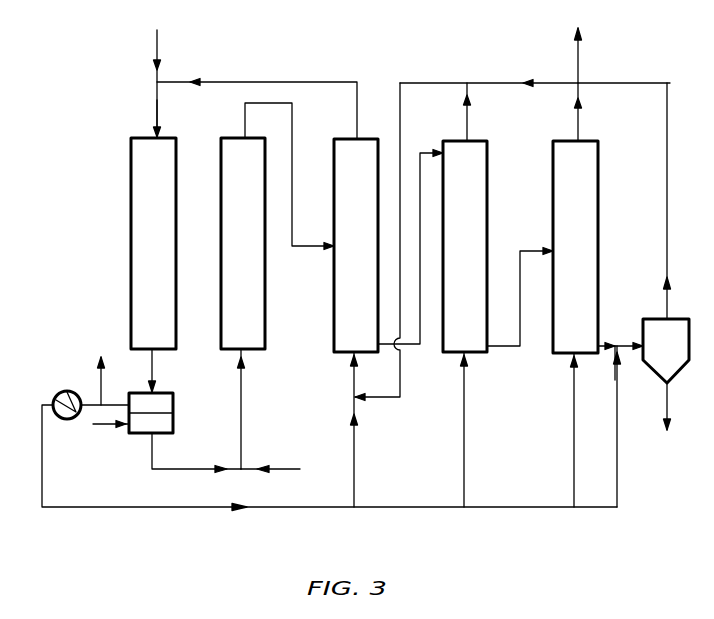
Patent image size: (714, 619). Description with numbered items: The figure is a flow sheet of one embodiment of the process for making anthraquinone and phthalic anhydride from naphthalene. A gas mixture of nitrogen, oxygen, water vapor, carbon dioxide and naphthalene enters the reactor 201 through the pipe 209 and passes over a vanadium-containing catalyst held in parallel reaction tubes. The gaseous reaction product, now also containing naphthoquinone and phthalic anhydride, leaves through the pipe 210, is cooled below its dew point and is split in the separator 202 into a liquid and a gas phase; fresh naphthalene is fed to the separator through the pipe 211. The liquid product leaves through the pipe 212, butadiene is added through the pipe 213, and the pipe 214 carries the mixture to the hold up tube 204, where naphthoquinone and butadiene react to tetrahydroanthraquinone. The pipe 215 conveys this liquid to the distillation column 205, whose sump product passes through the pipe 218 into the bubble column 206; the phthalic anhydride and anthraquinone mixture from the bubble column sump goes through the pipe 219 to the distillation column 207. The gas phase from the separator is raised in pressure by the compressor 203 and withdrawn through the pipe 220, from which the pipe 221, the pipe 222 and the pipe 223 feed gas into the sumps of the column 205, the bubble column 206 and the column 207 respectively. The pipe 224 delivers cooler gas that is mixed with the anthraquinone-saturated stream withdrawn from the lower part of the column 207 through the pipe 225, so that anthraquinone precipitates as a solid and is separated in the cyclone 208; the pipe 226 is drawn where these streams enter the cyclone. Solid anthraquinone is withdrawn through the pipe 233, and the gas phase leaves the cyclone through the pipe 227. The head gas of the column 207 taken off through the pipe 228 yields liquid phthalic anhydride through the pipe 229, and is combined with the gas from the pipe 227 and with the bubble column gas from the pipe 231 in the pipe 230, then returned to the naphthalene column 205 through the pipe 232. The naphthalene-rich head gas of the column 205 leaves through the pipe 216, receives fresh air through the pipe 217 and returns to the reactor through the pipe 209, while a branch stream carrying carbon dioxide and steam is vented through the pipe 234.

The reactor 201 is at (153, 243).
The separator 202 is at (173, 400).
The compressor 203 is at (68, 420).
The hold up tube 204 is at (243, 243).
The distillation column 205 is at (356, 245).
The bubble column 206 is at (465, 246).
The distillation column 207 is at (575, 247).
The cyclone 208 is at (666, 351).
The pipe 209 is at (157, 110).
The pipe 210 is at (152, 370).
The pipe 211 is at (105, 424).
The pipe 212 is at (200, 469).
The pipe 213 is at (271, 469).
The pipe 214 is at (241, 385).
The pipe 215 is at (292, 122).
The pipe 216 is at (244, 82).
The pipe 217 is at (158, 48).
The pipe 218 is at (420, 338).
The pipe 219 is at (520, 346).
The pipe 220 is at (204, 506).
The pipe 221 is at (353, 455).
The pipe 222 is at (463, 457).
The pipe 223 is at (573, 457).
The pipe 224 is at (617, 458).
The pipe 225 is at (607, 344).
The line 226 is at (627, 350).
The pipe 227 is at (666, 242).
The pipe 228 is at (578, 120).
The pipe 229 is at (578, 50).
The pipe 230 is at (485, 83).
The pipe 231 is at (467, 117).
The pipe 232 is at (400, 120).
The pipe 233 is at (665, 418).
The pipe 234 is at (101, 375).